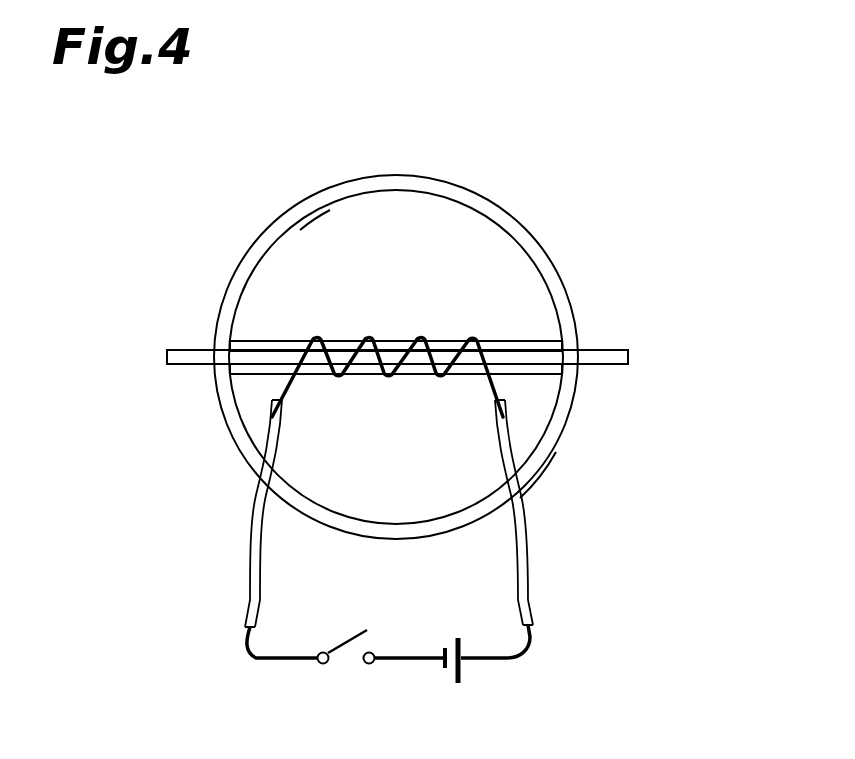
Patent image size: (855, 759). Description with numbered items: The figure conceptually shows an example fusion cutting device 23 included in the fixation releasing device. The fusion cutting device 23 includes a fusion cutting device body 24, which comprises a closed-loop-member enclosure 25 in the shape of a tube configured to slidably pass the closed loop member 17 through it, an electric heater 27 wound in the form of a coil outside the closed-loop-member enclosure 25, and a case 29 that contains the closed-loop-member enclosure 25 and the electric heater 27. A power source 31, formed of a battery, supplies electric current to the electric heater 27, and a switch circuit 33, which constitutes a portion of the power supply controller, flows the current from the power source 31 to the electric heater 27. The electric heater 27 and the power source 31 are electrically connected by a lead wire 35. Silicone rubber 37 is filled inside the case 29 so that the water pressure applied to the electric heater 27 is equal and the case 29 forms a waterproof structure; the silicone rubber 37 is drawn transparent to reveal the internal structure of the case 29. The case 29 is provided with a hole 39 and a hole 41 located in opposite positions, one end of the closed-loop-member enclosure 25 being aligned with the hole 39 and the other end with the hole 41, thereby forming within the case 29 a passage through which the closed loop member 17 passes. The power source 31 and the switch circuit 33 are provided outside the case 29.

The closed loop member 17 is at (626, 346).
The fusion cutting device 23 is at (565, 191).
The fusion cutting device body 24 is at (580, 250).
The closed-loop-member enclosure 25 is at (250, 338).
The electric heater 27 is at (473, 333).
The case 29 is at (560, 440).
The power source 31 is at (460, 670).
The switch circuit 33 is at (343, 658).
The lead wire 35 is at (250, 560).
The silicone rubber 37 is at (326, 270).
The hole 39 is at (215, 367).
The hole 41 is at (583, 342).